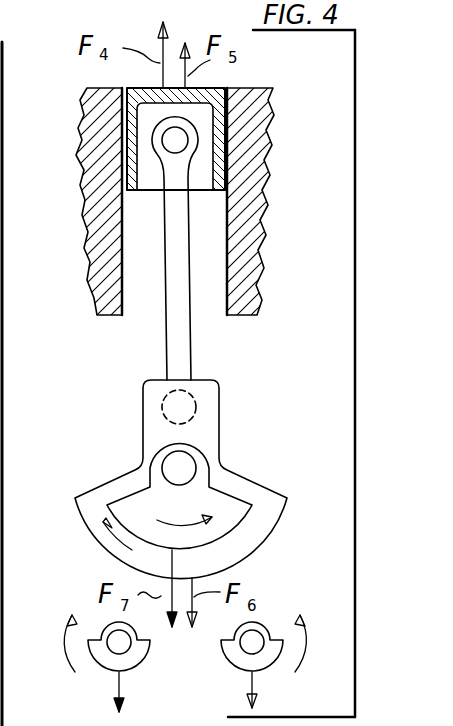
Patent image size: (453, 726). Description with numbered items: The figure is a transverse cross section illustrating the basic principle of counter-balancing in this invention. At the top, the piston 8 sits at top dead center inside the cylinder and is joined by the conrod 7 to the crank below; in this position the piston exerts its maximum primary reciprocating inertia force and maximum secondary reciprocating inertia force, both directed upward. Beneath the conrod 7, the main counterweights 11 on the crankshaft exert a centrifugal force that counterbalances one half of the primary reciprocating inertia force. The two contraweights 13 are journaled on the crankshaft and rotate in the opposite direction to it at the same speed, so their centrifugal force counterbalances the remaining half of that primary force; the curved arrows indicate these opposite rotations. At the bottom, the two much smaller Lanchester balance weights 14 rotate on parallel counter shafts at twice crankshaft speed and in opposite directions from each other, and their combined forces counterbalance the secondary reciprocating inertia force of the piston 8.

The conrod 7 is at (170, 343).
The piston 8 is at (136, 175).
The main counterweights 11 is at (88, 508).
The contraweights 13 is at (230, 517).
The Lanchester balance weights 14 is at (108, 658).